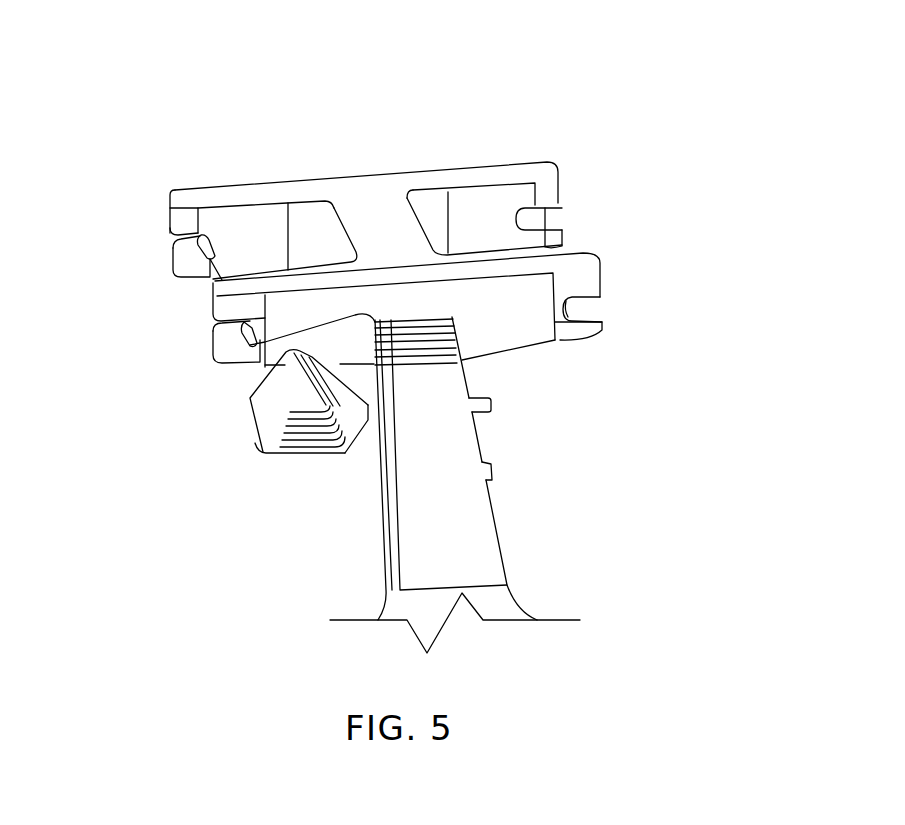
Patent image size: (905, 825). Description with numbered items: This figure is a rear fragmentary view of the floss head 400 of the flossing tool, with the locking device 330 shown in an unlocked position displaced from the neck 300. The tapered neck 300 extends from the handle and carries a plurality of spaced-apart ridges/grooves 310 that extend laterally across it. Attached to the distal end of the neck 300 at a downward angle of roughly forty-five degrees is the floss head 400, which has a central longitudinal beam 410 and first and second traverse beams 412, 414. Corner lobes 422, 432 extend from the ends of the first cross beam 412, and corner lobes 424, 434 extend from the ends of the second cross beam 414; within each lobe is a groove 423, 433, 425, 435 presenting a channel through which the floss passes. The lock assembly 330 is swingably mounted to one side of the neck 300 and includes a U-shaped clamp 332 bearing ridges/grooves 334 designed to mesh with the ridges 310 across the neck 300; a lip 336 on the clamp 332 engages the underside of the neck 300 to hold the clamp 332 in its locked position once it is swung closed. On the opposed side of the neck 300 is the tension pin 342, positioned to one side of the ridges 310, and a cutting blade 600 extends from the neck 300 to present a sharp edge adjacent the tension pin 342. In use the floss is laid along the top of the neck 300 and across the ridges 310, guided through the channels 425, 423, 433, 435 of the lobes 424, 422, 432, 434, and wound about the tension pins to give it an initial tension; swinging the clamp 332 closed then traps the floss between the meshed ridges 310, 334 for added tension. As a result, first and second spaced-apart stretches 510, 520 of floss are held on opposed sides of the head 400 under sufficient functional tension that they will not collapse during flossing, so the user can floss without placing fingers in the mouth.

The neck 300 is at (483, 557).
The ridges/grooves 310 is at (457, 350).
The lock assembly 330 is at (222, 445).
The U-shaped clamp 332 is at (253, 407).
The ridges/grooves 334 is at (293, 442).
The lip 336 is at (331, 456).
The second tension pin 342 is at (490, 404).
The floss head 400 is at (492, 122).
The central longitudinal beam 410 is at (373, 200).
The first traverse beam 412 is at (302, 192).
The second traverse beam 414 is at (533, 282).
The corner lobe 422 is at (175, 194).
The groove 423 is at (172, 250).
The corner lobe 424 is at (210, 292).
The groove 425 is at (213, 338).
The corner lobe 432 is at (557, 168).
The groove 433 is at (560, 218).
The corner lobe 434 is at (597, 266).
The groove 435 is at (600, 308).
The first stretch of floss 510 is at (220, 264).
The second stretch of floss 520 is at (508, 232).
The cutting blade 600 is at (493, 470).